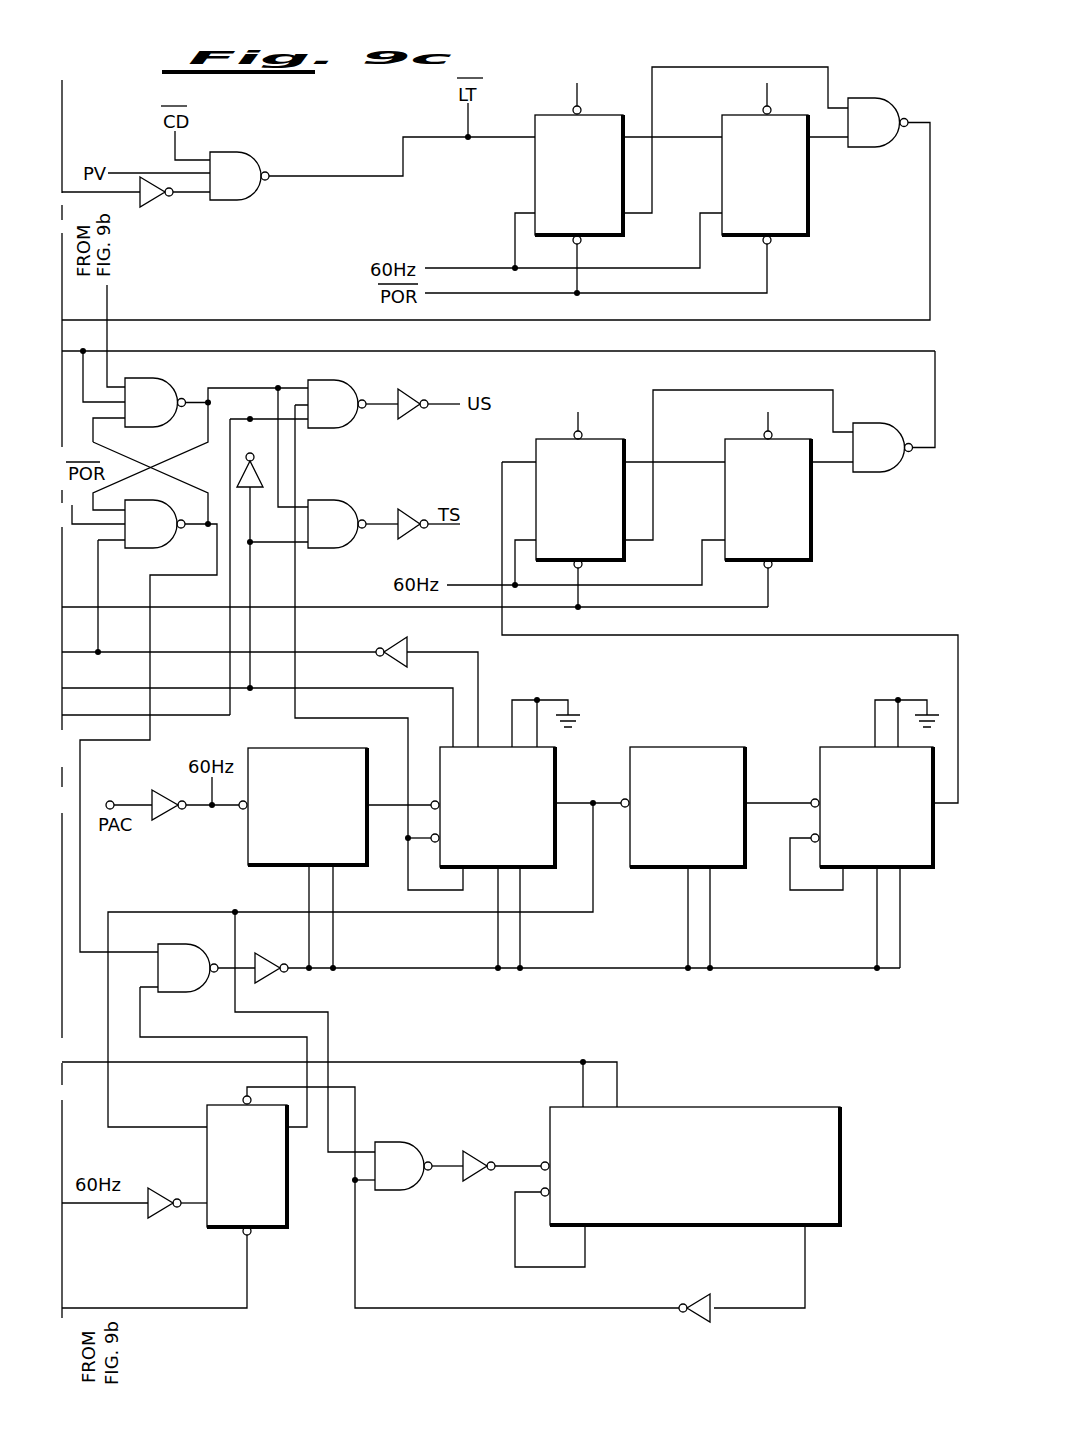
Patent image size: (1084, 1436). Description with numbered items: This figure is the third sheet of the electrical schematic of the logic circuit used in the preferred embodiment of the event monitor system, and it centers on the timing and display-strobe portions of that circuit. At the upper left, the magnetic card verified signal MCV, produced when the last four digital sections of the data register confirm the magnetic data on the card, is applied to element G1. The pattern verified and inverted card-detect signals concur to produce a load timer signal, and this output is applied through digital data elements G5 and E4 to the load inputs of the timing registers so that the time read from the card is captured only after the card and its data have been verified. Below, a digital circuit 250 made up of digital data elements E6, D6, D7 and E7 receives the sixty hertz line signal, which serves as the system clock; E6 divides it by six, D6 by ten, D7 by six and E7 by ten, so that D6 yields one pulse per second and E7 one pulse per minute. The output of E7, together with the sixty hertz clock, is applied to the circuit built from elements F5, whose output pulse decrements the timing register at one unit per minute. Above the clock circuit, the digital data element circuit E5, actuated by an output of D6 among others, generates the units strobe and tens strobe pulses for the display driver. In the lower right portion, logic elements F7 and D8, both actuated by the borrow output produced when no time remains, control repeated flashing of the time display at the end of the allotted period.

The digital circuit 250 is at (590, 782).
The element G1 is at (136, 203).
The magnetic card verified signal MCV is at (198, 194).
The digital data element G5 is at (600, 126).
The digital data element E4 is at (866, 106).
The digital data element circuit E5 is at (366, 388).
The element F5 is at (673, 486).
The digital data element E6 is at (307, 806).
The digital data element D6 is at (493, 807).
The digital data element D7 is at (683, 807).
The digital data element E7 is at (872, 807).
The logic element D8 is at (247, 1165).
The logic element F7 is at (690, 1166).